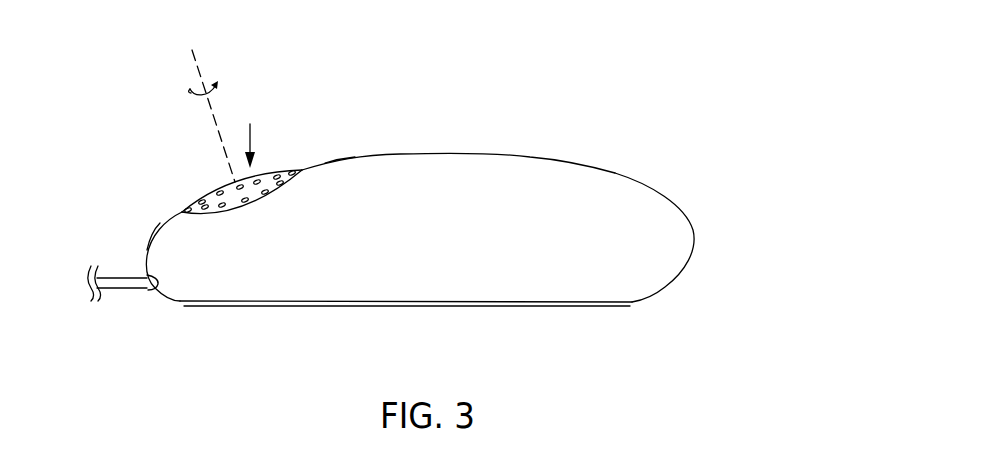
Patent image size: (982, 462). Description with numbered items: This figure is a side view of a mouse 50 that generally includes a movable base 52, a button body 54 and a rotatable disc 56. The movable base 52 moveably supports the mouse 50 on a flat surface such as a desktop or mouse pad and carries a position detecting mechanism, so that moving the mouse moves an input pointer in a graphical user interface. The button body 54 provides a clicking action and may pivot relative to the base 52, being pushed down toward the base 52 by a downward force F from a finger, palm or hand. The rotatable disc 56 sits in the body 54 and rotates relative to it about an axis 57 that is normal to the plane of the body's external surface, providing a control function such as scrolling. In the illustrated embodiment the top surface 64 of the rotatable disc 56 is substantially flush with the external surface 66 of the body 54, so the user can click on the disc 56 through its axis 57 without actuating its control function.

The mouse 50 is at (391, 196).
The movable base 52 is at (308, 307).
The button body 54 is at (583, 165).
The rotatable disc 56 is at (210, 195).
The axis 57 is at (198, 72).
The top surface 64 is at (282, 172).
The external surface 66 is at (333, 162).